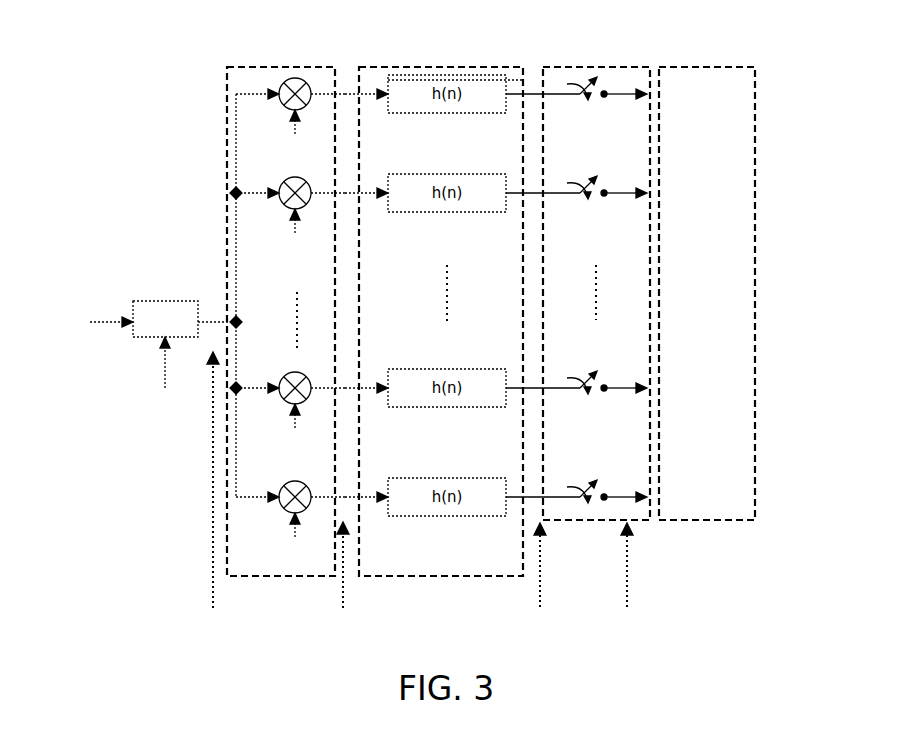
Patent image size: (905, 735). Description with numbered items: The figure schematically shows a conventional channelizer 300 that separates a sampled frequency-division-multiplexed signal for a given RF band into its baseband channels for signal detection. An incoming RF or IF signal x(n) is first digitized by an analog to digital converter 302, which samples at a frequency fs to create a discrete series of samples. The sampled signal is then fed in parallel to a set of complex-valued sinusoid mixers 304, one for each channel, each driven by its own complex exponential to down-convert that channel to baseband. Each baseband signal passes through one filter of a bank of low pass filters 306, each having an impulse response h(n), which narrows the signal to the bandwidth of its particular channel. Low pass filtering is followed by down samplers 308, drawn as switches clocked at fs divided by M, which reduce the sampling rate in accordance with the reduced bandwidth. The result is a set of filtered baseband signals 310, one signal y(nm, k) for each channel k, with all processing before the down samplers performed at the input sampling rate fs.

The conventional channelizer 300 is at (128, 91).
The analog to digital converter (ADC) 302 is at (162, 300).
The complex-valued sinusoid mixers 304 is at (282, 67).
The bank of low pass filters 306 is at (443, 67).
The down samplers 308 is at (594, 67).
The filtered baseband signals 310 is at (703, 67).